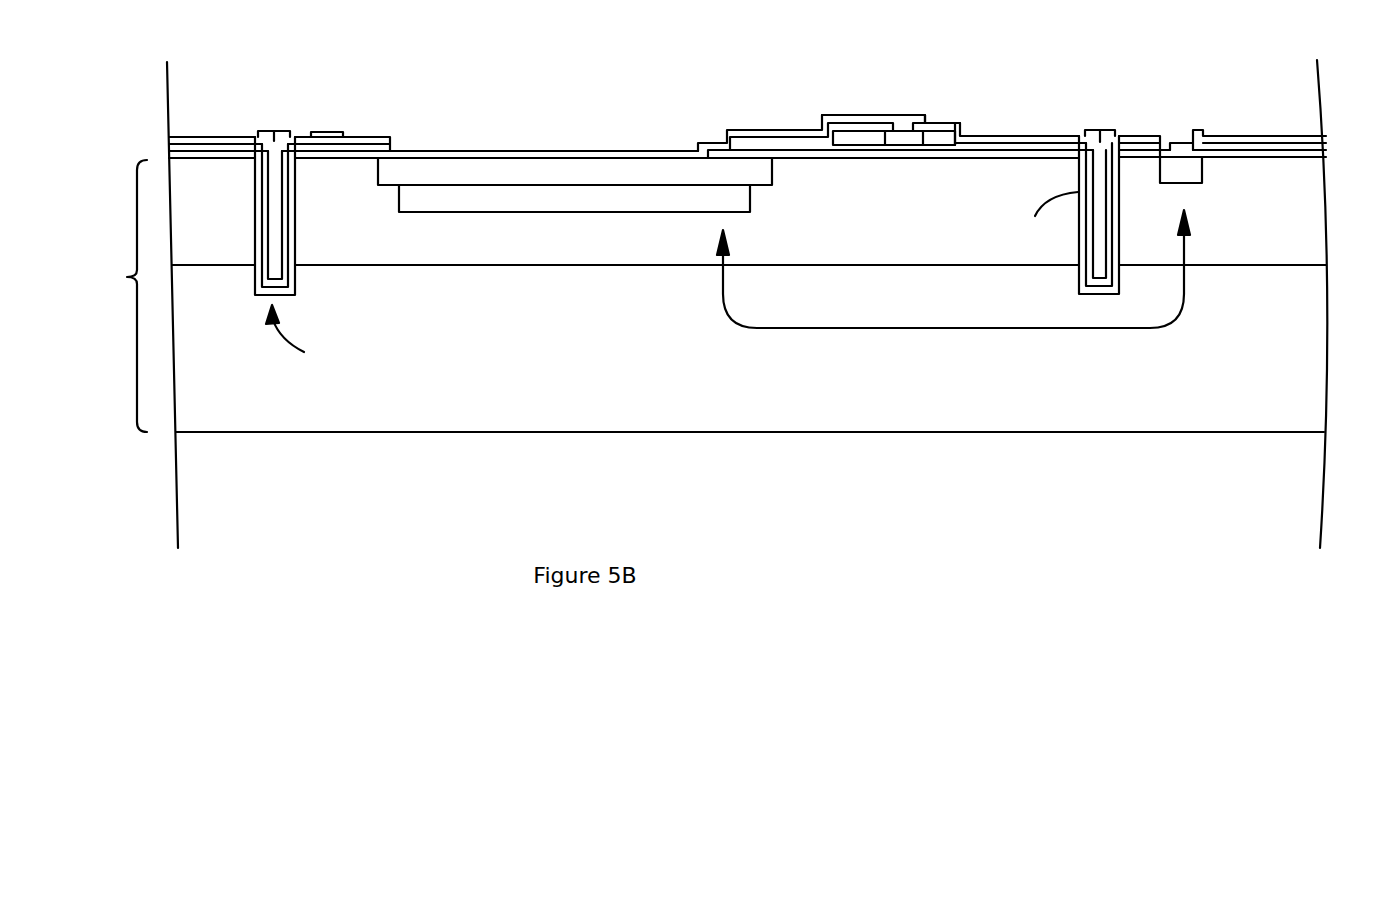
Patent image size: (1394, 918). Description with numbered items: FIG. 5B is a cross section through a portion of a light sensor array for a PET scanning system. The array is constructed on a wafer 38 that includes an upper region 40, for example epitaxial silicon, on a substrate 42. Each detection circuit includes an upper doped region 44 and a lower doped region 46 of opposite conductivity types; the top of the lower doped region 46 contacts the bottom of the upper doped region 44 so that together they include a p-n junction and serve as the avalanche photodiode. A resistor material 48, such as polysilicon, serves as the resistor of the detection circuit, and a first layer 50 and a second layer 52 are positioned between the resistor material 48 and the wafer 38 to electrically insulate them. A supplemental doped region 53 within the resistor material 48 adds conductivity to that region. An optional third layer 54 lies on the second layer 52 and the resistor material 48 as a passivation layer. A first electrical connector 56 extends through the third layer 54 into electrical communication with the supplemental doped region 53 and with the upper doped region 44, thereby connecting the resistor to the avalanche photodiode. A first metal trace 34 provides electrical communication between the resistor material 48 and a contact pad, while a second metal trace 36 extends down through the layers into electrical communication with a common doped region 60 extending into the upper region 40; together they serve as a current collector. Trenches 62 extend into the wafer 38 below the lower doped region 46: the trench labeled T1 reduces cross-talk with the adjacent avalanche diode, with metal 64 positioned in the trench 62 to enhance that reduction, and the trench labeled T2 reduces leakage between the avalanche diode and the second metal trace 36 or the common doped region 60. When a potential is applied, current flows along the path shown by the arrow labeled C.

The first metal trace 34 is at (341, 132).
The second metal trace 36 is at (1195, 130).
The wafer 38 is at (118, 296).
The upper region 40 is at (1297, 192).
The substrate 42 is at (1297, 352).
The upper doped region 44 is at (395, 174).
The lower doped region 46 is at (413, 200).
The resistor material 48 is at (937, 135).
The first layer 50 is at (952, 148).
The second layer 52 is at (1018, 152).
The supplemental doped region 53 is at (900, 138).
The third layer 54 is at (206, 136).
The first electrical connector 56 is at (853, 120).
The common doped region 60 is at (1204, 184).
The trench 62 is at (1080, 293).
The metal 64 is at (274, 131).
The trench T1 is at (298, 344).
The trench T2 is at (1048, 225).
The current path arrow C is at (748, 328).